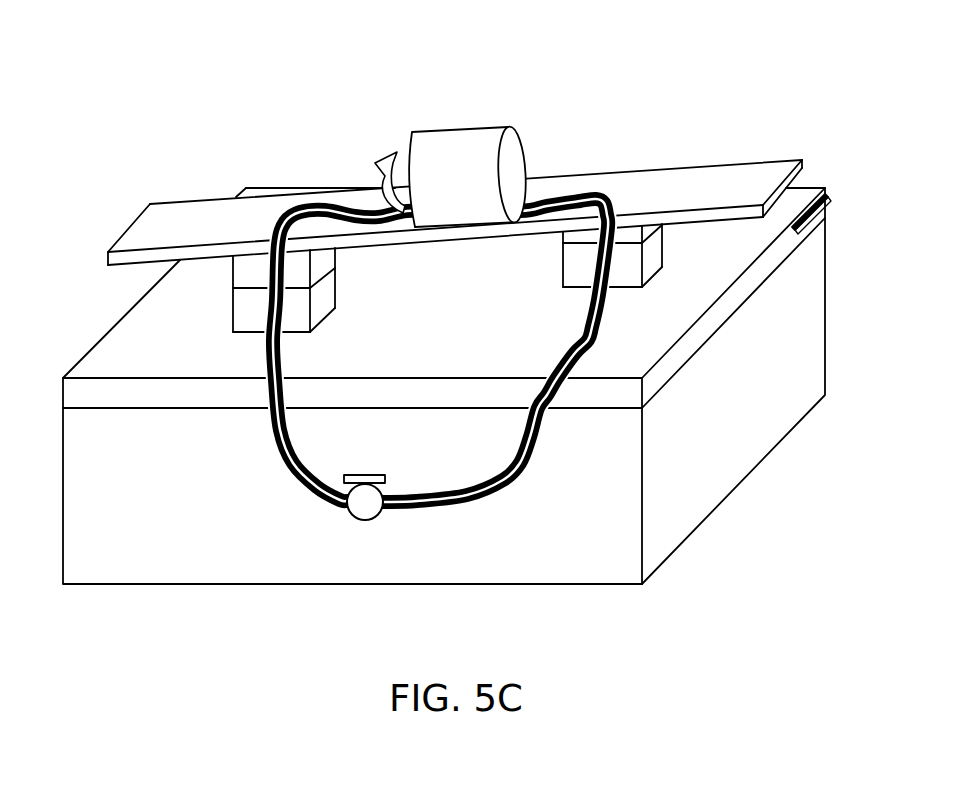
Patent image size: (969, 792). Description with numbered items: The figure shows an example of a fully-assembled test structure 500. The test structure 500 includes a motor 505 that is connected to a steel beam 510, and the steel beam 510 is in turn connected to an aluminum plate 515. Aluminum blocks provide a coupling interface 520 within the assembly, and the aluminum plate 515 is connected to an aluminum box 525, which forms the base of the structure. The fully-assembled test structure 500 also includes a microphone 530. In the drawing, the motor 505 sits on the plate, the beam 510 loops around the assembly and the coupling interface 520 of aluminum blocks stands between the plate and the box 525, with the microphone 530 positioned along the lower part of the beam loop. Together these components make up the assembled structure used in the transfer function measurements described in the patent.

The fully-assembled test structure 500 is at (143, 62).
The motor 505 is at (459, 126).
The steel beam 510 is at (330, 204).
The aluminum plate 515 is at (823, 188).
The coupling interface 520 is at (270, 288).
The aluminum box 525 is at (170, 567).
The microphone 530 is at (365, 521).